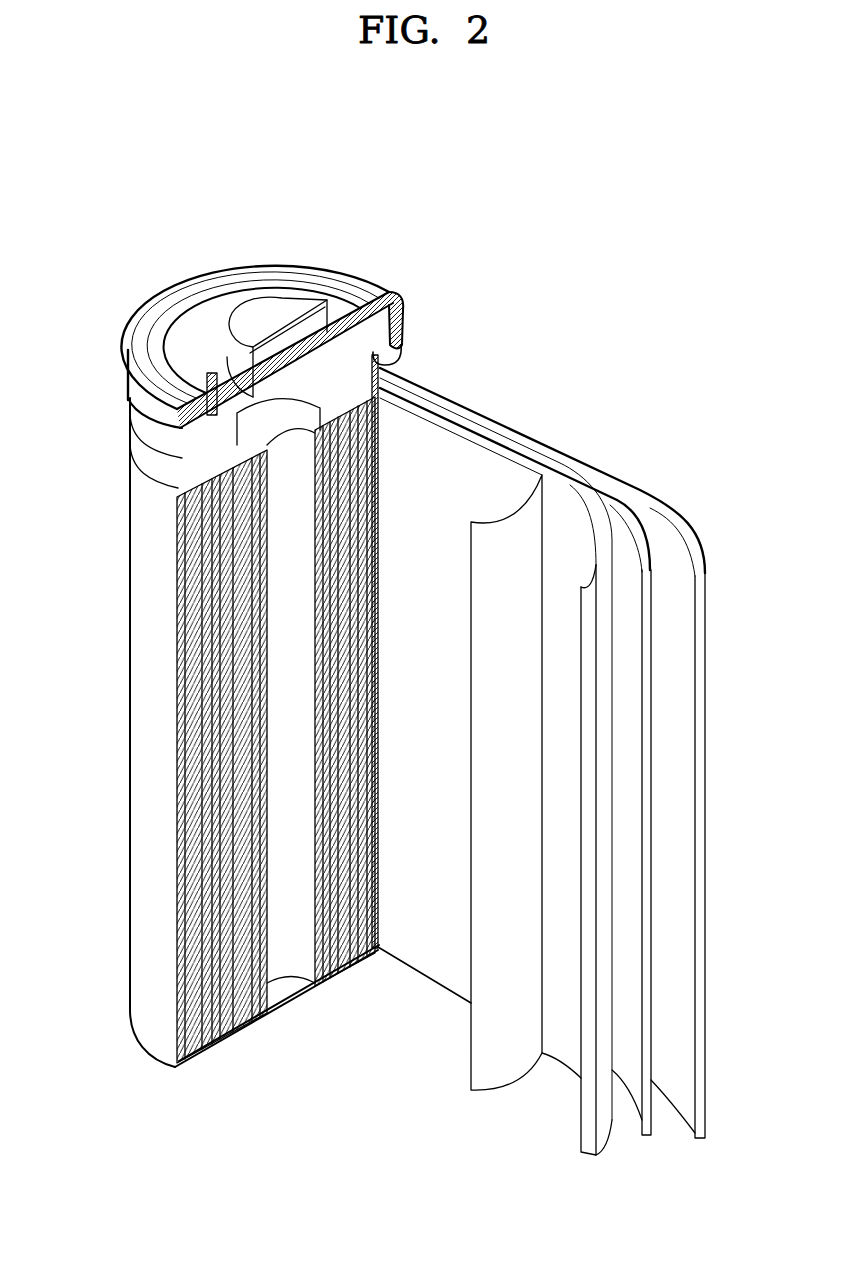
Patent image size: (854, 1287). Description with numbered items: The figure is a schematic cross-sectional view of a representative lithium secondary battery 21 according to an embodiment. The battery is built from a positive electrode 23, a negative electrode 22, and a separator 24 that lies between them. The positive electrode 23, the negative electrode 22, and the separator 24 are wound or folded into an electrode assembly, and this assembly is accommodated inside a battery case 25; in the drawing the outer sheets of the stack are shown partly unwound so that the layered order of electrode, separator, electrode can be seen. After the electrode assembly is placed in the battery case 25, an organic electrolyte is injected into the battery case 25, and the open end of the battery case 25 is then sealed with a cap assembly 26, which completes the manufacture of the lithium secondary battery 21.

The lithium secondary battery 21 is at (597, 290).
The negative electrode 22 is at (690, 547).
The positive electrode 23 is at (570, 500).
The separator 24 is at (505, 528).
The battery case 25 is at (140, 716).
The cap assembly 26 is at (262, 310).